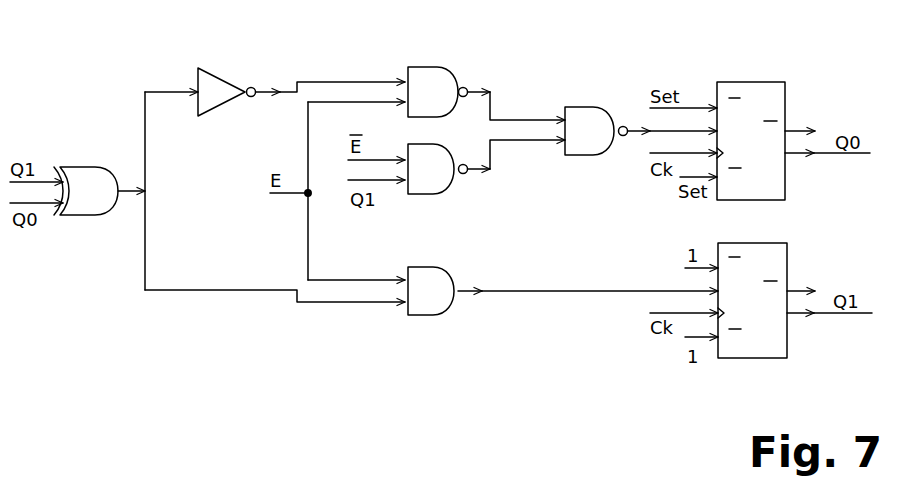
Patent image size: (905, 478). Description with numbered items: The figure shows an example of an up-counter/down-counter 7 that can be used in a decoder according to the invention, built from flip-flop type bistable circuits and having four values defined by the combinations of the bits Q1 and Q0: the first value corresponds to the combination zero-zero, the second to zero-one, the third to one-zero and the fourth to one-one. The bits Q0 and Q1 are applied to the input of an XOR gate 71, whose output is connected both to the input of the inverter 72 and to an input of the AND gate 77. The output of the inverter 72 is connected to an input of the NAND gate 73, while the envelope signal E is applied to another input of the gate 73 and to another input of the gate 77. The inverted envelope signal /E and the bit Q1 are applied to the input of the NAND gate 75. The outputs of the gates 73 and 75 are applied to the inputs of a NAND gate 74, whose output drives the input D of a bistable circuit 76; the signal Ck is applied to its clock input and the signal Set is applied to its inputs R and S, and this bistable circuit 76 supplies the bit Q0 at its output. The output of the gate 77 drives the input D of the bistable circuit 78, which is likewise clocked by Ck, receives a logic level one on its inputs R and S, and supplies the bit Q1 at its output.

The up-counter/down-counter 7 is at (240, 312).
The XOR gate 71 is at (88, 175).
The inverter 72 is at (222, 100).
The NAND gate 73 is at (432, 70).
The NAND gate 74 is at (585, 105).
The NAND gate 75 is at (428, 195).
The bistable circuit 76 is at (752, 81).
The AND gate 77 is at (428, 316).
The bistable circuit 78 is at (757, 358).